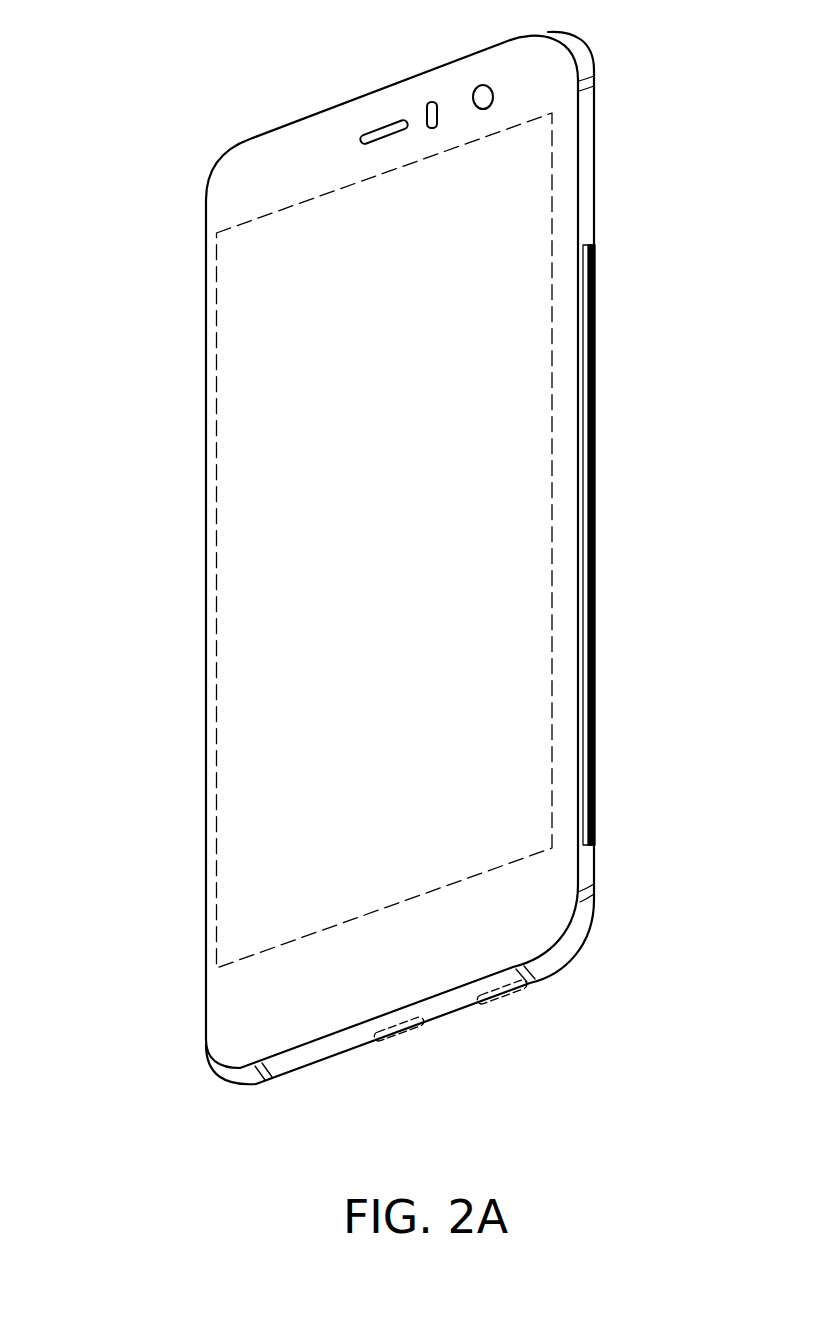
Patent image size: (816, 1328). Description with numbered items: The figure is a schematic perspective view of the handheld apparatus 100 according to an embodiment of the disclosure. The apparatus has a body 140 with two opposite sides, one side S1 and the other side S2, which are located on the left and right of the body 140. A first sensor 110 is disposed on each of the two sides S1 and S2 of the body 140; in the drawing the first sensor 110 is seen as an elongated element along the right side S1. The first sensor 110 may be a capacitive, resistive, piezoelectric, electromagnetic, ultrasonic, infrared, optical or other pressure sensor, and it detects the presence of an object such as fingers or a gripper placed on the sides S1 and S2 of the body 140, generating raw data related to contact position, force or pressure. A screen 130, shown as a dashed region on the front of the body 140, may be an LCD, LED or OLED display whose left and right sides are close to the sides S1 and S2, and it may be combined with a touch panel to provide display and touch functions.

The handheld apparatus 100 is at (728, 1120).
The first sensor 110 is at (585, 393).
The screen 130 is at (548, 164).
The body 140 is at (553, 58).
The side S1 is at (587, 215).
The side S2 is at (197, 335).